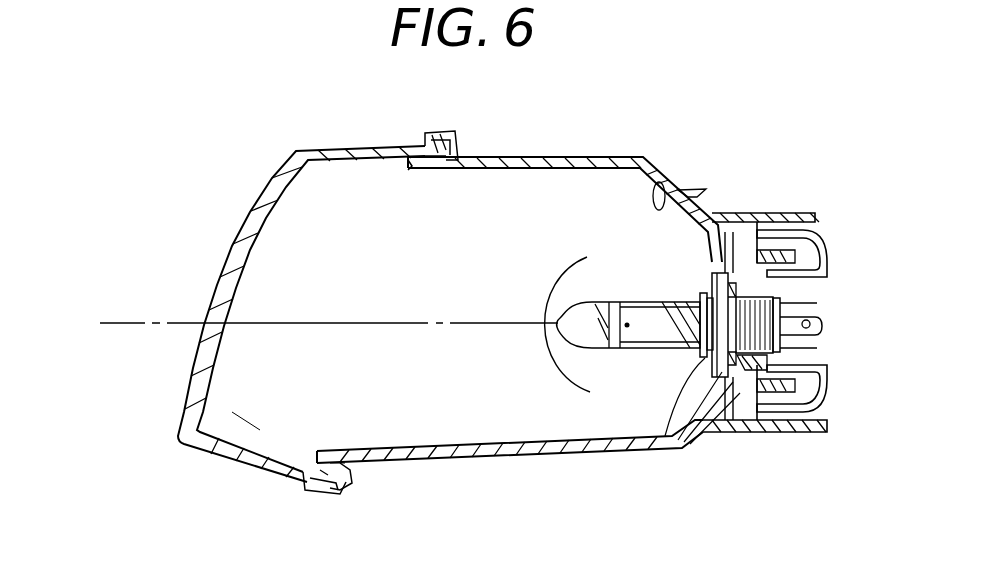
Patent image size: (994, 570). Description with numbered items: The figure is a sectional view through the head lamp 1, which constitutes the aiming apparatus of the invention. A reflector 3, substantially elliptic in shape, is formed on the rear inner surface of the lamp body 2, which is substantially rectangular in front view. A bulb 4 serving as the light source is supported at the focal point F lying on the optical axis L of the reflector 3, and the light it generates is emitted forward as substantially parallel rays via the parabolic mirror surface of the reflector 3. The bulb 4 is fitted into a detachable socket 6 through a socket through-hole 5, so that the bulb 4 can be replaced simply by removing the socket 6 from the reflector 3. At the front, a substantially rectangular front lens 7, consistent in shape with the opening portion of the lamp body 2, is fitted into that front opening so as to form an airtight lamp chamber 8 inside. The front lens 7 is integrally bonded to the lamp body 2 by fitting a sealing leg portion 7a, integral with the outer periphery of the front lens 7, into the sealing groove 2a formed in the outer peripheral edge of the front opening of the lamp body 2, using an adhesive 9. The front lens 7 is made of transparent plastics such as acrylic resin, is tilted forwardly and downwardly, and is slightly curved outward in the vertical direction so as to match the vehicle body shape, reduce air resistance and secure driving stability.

The head lamp 1 is at (645, 145).
The lamp body 2 is at (543, 157).
The sealing groove 2a is at (406, 161).
The reflector 3 is at (675, 184).
The bulb 4 is at (652, 340).
The socket through-hole 5 is at (673, 434).
The socket 6 is at (815, 314).
The front lens 7 is at (304, 152).
The sealing leg portion 7a is at (442, 138).
The lamp chamber 8 is at (243, 424).
The adhesive 9 is at (440, 169).
The focal point F is at (627, 322).
The optical axis L is at (317, 328).